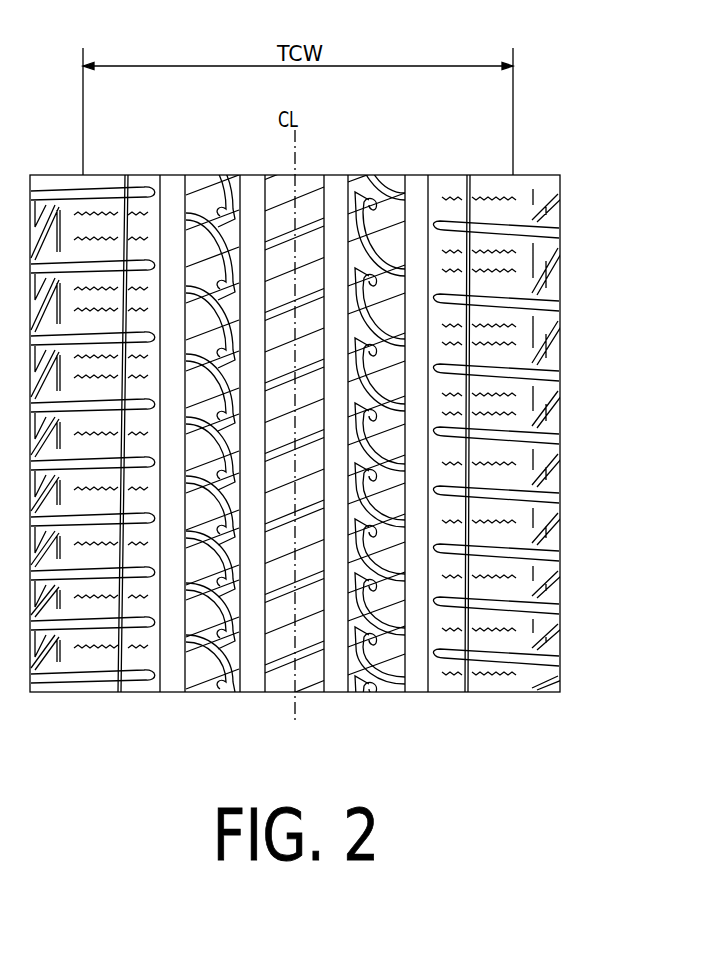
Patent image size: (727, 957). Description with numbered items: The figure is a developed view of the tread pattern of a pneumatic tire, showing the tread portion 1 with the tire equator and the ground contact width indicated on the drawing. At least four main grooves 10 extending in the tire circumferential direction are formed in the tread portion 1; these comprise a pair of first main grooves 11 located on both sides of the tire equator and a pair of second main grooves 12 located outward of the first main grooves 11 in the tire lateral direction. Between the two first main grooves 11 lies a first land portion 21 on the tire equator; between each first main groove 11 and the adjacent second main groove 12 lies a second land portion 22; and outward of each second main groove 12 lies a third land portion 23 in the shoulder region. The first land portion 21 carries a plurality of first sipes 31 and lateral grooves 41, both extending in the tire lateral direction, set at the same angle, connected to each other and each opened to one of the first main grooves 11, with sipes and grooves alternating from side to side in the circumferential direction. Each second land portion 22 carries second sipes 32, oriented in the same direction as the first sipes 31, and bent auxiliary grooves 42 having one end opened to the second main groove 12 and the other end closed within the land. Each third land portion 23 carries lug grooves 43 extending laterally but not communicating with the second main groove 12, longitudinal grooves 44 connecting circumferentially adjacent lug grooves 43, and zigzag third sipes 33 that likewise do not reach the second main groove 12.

The tread portion 1 is at (530, 178).
The main grooves 10 is at (165, 99).
The first main grooves 11 is at (232, 178).
The second main grooves 12 is at (172, 180).
The first land portion 21 is at (325, 713).
The second land portions 22 is at (243, 713).
The third land portions 23 is at (155, 713).
The first sipes 31 is at (280, 195).
The second sipes 32 is at (197, 200).
The third sipes 33 is at (85, 205).
The lateral grooves 41 is at (307, 195).
The auxiliary grooves 42 is at (220, 192).
The lug grooves 43 is at (100, 193).
The longitudinal grooves 44 is at (133, 195).